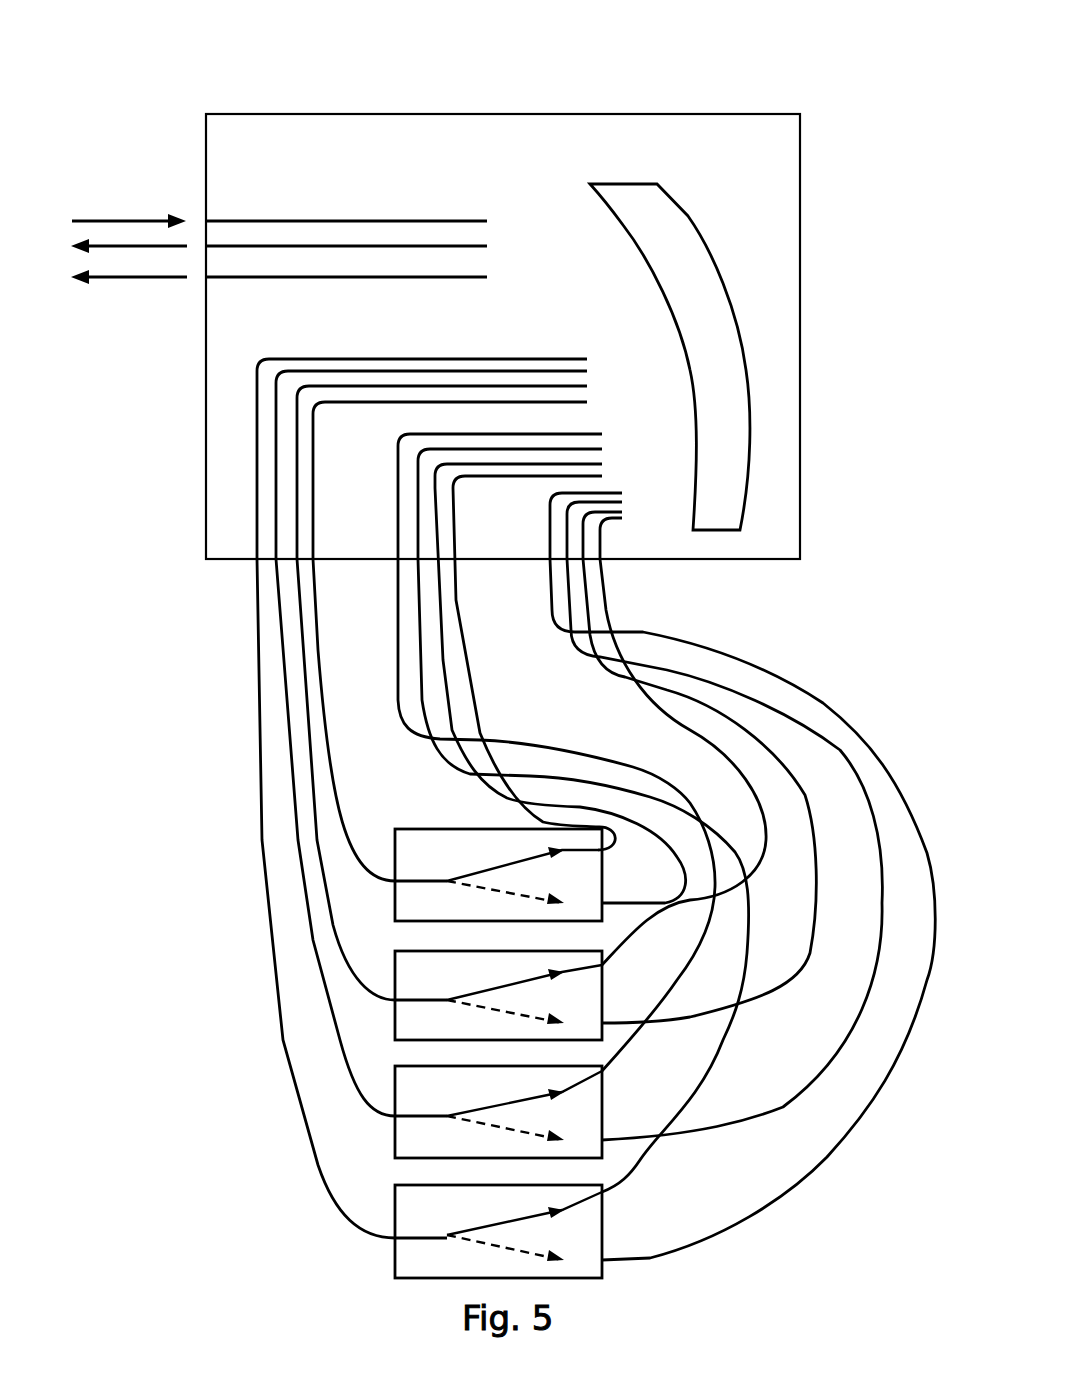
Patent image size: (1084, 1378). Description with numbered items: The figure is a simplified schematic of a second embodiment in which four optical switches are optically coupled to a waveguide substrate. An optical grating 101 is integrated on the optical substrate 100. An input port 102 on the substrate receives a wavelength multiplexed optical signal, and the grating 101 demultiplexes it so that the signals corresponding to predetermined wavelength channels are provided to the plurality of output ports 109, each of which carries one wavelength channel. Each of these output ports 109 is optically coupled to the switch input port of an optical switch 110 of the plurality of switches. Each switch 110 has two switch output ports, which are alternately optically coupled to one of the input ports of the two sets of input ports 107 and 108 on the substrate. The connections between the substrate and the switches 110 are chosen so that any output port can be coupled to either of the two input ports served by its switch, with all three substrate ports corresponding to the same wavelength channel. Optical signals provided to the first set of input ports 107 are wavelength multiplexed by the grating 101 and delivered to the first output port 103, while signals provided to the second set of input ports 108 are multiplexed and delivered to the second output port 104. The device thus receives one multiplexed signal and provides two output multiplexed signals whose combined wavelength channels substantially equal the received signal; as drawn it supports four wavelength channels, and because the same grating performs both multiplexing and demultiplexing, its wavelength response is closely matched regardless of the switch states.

The optical substrate 100 is at (758, 141).
The optical grating 101 is at (690, 212).
The input port 102 is at (204, 221).
The first output port 103 is at (204, 247).
The second output port 104 is at (204, 277).
The first set of input ports 107 is at (468, 582).
The second set of input ports 108 is at (618, 582).
The plurality of output ports 109 is at (328, 582).
The optical switch 110 is at (407, 902).